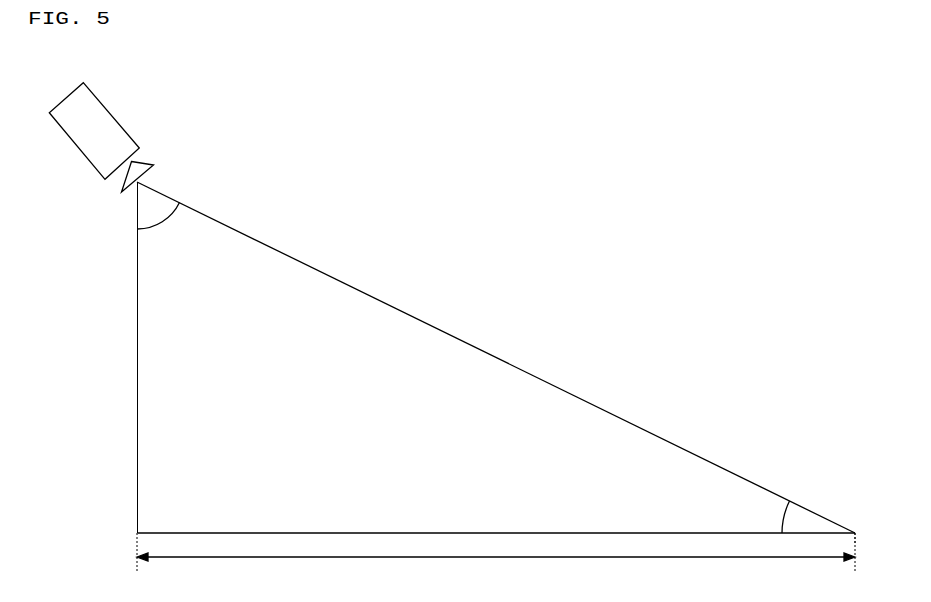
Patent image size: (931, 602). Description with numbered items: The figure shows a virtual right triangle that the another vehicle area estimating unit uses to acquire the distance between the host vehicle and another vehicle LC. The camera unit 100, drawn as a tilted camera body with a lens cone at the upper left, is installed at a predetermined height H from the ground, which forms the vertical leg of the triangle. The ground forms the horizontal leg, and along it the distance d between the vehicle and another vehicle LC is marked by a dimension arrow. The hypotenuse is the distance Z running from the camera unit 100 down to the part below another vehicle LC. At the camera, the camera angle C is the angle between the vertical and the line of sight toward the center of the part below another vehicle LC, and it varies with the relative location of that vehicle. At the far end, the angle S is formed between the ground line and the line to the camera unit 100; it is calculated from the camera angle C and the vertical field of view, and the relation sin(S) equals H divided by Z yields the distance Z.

The camera unit 100 is at (112, 113).
The distance between the camera unit and a part below another vehicle Z is at (496, 357).
The height H is at (124, 357).
The distance between the vehicle and another vehicle d is at (496, 560).
The camera angle C is at (159, 228).
The angle S is at (773, 517).
The another vehicle LC is at (869, 539).